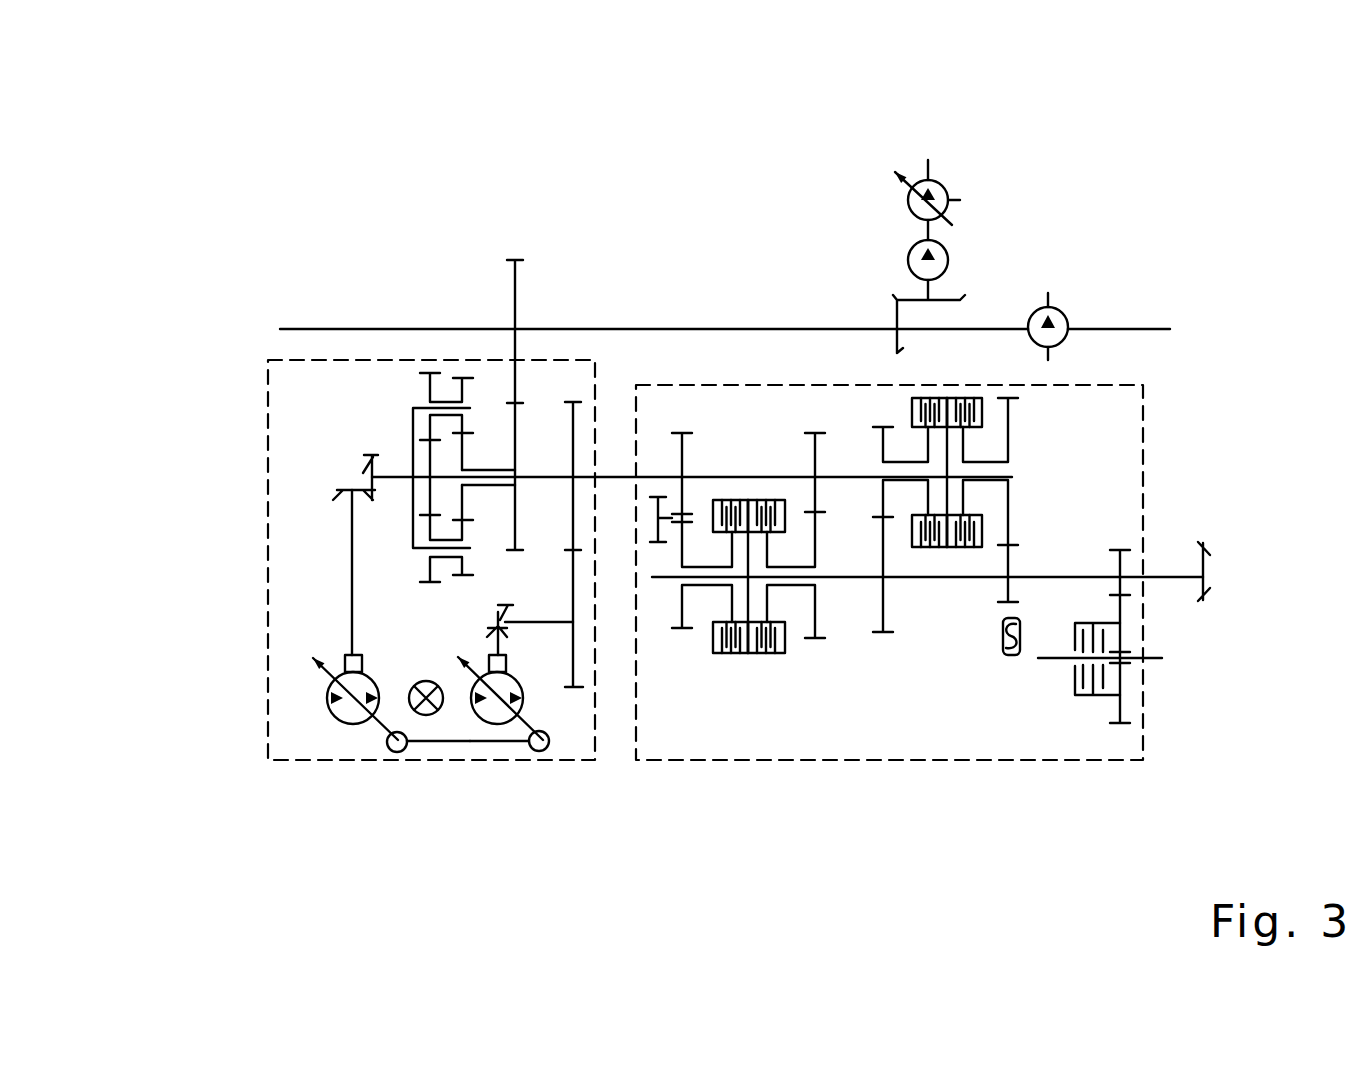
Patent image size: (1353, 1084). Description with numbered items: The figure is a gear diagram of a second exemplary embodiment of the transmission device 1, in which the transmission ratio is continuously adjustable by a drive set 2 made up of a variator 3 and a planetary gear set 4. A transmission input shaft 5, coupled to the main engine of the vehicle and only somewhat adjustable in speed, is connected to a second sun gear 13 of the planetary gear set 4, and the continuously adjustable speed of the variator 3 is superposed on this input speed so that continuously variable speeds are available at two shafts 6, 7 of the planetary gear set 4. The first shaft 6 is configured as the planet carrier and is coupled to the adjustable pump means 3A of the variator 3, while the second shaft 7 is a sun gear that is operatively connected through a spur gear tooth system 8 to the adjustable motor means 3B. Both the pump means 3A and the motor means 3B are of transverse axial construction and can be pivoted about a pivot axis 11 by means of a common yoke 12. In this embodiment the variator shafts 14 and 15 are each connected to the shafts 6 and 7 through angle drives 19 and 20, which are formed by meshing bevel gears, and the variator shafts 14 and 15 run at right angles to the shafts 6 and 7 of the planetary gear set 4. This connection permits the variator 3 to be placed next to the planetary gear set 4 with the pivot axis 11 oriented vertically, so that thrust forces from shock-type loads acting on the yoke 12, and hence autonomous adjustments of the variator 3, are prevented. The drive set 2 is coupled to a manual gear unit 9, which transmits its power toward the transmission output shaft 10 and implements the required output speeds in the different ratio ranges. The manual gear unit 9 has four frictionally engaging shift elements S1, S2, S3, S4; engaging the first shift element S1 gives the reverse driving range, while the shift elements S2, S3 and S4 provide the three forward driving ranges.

The transmission device 1 is at (362, 322).
The drive set 2 is at (337, 768).
The variator 3 is at (430, 747).
The pump means 3A is at (327, 697).
The motor means 3B is at (476, 674).
The planetary gear set 4 is at (474, 362).
The transmission input shaft 5 is at (448, 329).
The first shaft 6 is at (418, 406).
The second shaft 7 is at (427, 457).
The spur gear tooth system 8 is at (582, 567).
The manual gear unit 9 is at (887, 763).
The transmission output shaft 10 is at (1165, 577).
The pivot axis 11 is at (417, 681).
The yoke 12 is at (470, 742).
The second sun gear 13 is at (465, 457).
The variator shaft 14 is at (352, 540).
The variator shaft 15 is at (513, 627).
The angle drive 19 is at (352, 477).
The angle drive 20 is at (516, 633).
The first shift element S1 is at (728, 497).
The second shift element S2 is at (765, 497).
The third shift element S3 is at (907, 412).
The fourth shift element S4 is at (965, 395).